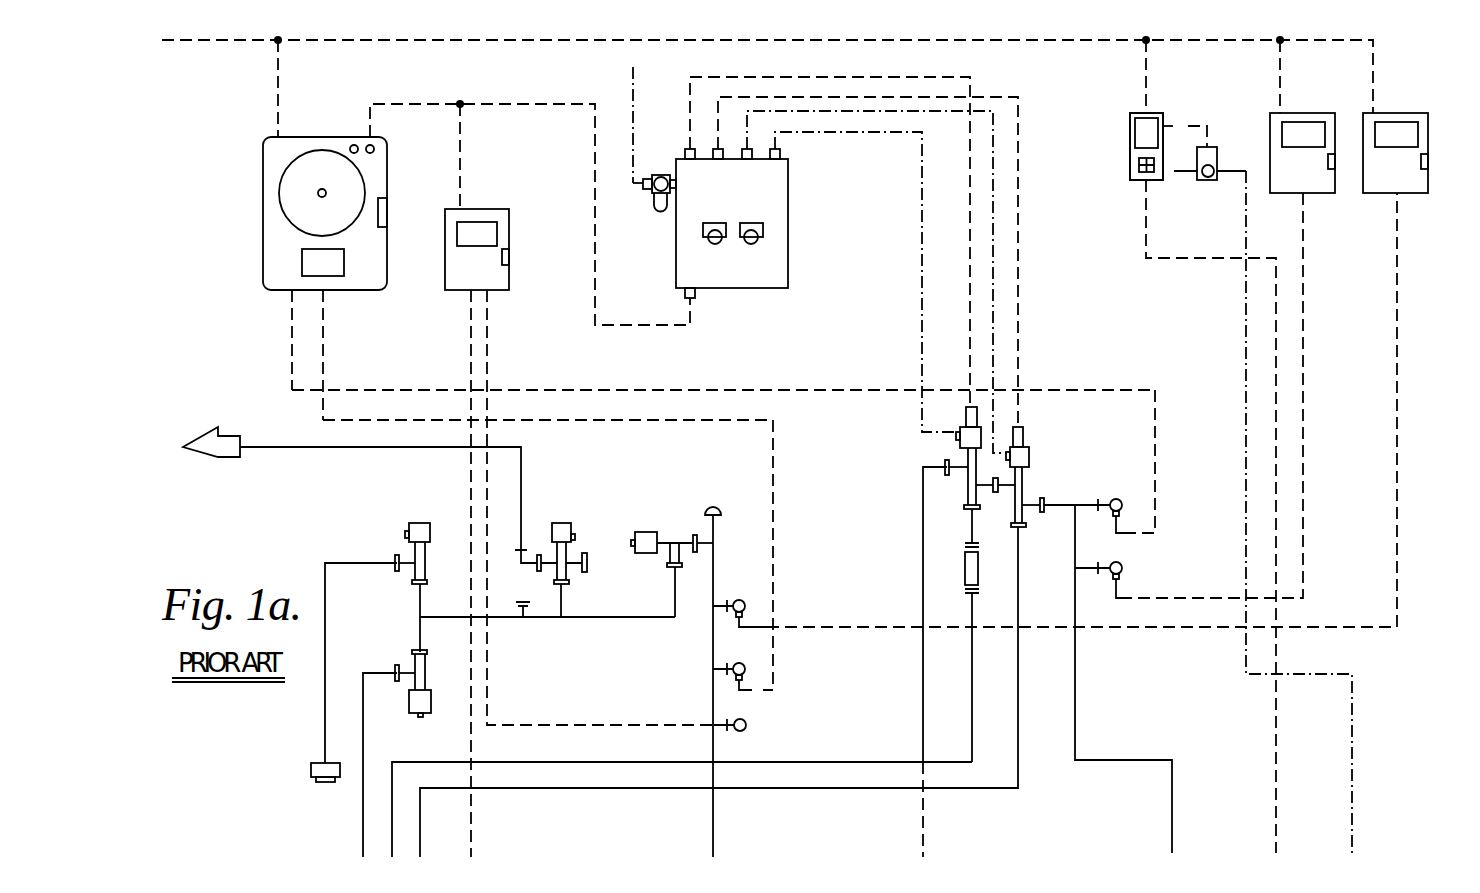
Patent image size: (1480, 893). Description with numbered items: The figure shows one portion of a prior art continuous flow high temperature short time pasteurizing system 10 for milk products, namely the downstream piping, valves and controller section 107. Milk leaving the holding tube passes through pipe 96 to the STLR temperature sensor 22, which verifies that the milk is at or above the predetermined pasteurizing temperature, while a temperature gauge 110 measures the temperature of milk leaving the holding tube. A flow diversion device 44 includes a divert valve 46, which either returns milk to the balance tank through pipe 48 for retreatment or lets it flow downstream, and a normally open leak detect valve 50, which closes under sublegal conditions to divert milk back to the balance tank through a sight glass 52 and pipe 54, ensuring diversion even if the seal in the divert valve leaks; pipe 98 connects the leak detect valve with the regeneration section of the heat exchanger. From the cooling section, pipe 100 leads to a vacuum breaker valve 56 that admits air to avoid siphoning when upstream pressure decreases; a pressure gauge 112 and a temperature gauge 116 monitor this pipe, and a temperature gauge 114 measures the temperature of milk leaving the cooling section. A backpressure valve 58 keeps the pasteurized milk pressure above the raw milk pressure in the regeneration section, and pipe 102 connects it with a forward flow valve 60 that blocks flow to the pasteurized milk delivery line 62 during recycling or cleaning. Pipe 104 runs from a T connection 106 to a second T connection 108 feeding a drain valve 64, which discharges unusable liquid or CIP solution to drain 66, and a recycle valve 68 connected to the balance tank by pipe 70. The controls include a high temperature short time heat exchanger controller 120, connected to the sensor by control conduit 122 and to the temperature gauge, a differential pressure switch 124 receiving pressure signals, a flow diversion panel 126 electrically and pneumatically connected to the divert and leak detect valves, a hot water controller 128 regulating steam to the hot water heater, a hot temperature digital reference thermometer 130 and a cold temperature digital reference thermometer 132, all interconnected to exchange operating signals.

The pasteurizing system 10 is at (1393, 46).
The temperature sensor 22 is at (1108, 498).
The flow diversion device 44 is at (1047, 449).
The divert valve 46 is at (1030, 486).
The pipe 48 is at (1010, 788).
The leak detect valve 50 is at (958, 460).
The sight glass 52 is at (965, 570).
The pipe 54 is at (837, 760).
The vacuum breaker valve 56 is at (718, 508).
The backpressure valve 58 is at (667, 533).
The forward flow valve 60 is at (575, 555).
The pasteurized milk delivery line 62 is at (302, 447).
The drain valve 64 is at (425, 560).
The drain 66 is at (311, 770).
The recycle valve 68 is at (428, 673).
The pipe 70 is at (363, 825).
The pipe 96 is at (1143, 760).
The pipe 98 is at (923, 683).
The pipe 100 is at (713, 713).
The pipe 102 is at (645, 620).
The pipe 104 is at (498, 620).
The T connection 106 is at (562, 620).
The controller section 107 is at (1130, 108).
The second T connection 108 is at (420, 620).
The temperature gauge 110 is at (1123, 568).
The pressure gauge 112 is at (732, 733).
The temperature gauge 114 is at (734, 600).
The temperature gauge 116 is at (749, 669).
The high temperature short time heat exchanger controller 120 is at (265, 137).
The control conduit 122 is at (360, 390).
The differential pressure switch 124 is at (485, 209).
The flow diversion panel 126 is at (790, 222).
The hot water controller 128 is at (1130, 165).
The hot temperature digital reference thermometer 130 is at (1305, 194).
The cold temperature digital reference thermometer 132 is at (1393, 113).